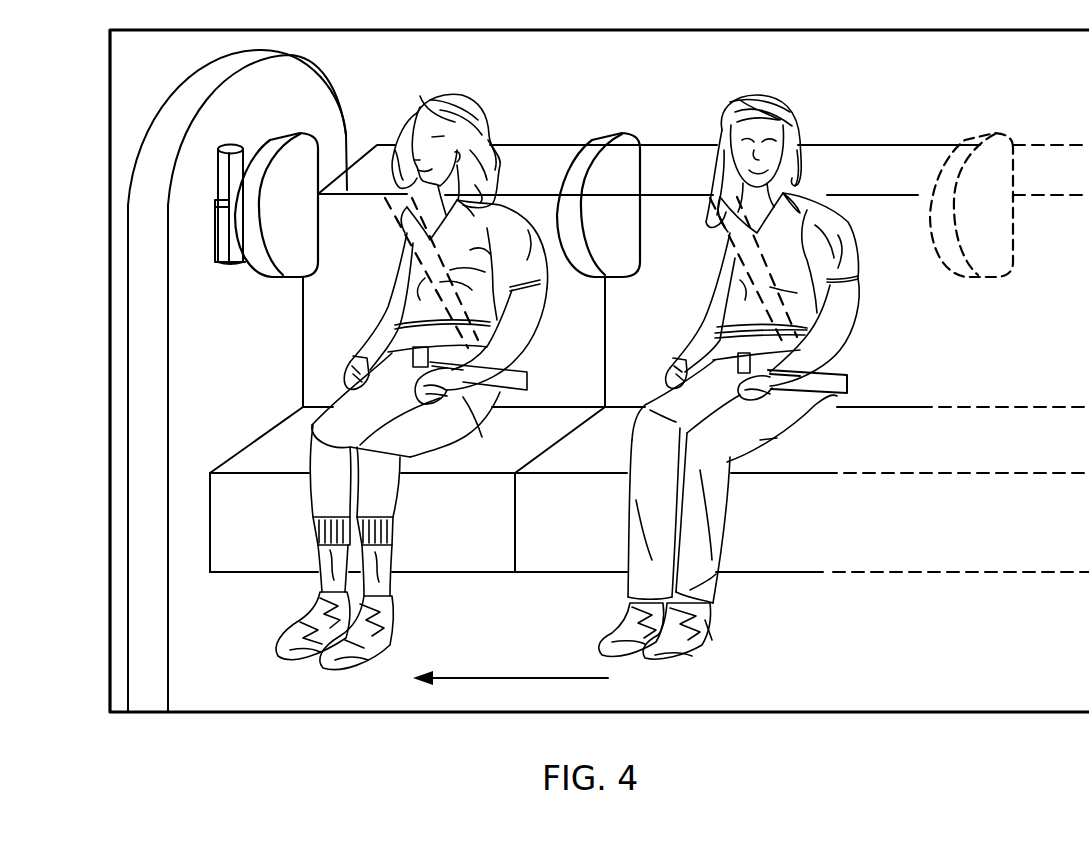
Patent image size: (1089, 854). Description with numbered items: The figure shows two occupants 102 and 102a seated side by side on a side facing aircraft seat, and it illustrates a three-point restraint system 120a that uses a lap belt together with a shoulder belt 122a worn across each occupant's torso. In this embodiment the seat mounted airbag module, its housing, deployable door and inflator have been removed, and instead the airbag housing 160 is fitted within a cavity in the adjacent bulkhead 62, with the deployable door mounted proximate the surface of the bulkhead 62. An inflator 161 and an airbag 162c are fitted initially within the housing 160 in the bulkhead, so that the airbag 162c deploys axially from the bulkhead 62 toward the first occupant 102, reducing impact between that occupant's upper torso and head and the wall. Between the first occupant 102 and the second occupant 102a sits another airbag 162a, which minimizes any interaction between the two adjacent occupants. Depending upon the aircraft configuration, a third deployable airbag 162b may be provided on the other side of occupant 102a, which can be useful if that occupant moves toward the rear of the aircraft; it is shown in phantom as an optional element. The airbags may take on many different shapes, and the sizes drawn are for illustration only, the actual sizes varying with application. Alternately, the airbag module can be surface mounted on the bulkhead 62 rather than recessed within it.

The bulkhead 62 is at (145, 340).
The first occupant 102 is at (426, 370).
The second occupant 102a is at (776, 368).
The 3-point restraint system 120a is at (856, 378).
The shoulder belt 122a is at (410, 230).
The airbag housing 160 is at (213, 227).
The inflator 161 is at (222, 186).
The airbag 162a is at (628, 152).
The third deployable airbag 162b is at (1000, 157).
The airbag 162c is at (308, 162).